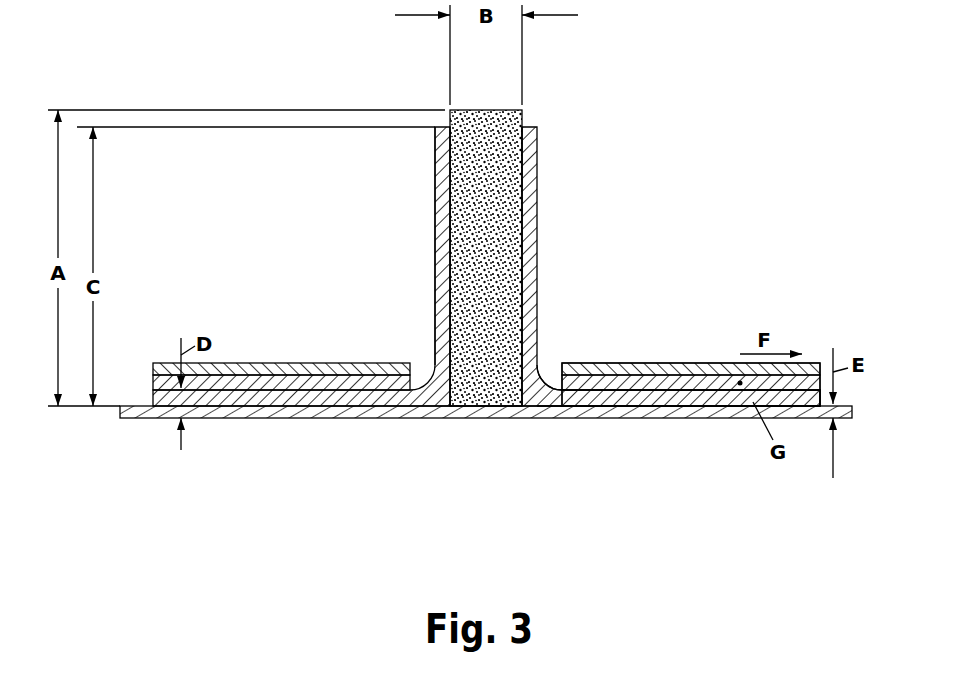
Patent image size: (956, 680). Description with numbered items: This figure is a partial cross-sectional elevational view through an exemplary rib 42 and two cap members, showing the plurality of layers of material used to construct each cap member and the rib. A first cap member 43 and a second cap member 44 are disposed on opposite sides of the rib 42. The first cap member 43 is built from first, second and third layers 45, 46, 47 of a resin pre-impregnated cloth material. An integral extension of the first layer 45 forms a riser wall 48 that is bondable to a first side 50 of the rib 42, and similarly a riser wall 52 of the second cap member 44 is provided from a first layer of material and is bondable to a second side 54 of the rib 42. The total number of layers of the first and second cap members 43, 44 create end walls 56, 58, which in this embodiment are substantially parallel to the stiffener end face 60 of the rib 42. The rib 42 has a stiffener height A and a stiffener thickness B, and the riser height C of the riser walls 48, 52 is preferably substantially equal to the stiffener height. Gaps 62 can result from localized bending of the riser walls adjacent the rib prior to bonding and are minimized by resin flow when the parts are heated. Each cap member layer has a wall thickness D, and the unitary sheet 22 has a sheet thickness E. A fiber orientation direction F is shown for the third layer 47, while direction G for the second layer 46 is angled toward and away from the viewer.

The unitary sheet 22 is at (314, 418).
The rib 42 is at (521, 110).
The first cap member 43 is at (569, 363).
The second cap member 44 is at (265, 363).
The first layer 45 is at (590, 395).
The second layer 46 is at (638, 382).
The third layer 47 is at (673, 370).
The riser wall 48 is at (533, 290).
The first side 50 is at (526, 232).
The riser wall 52 is at (440, 280).
The second side 54 is at (447, 222).
The end wall 56 is at (636, 406).
The end wall 58 is at (262, 407).
The stiffener end face 60 is at (493, 406).
The gaps 62 is at (528, 406).